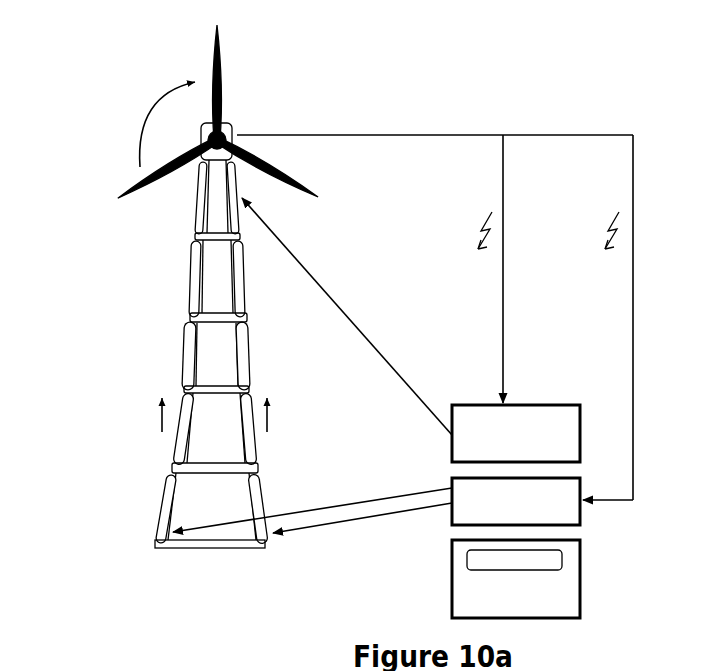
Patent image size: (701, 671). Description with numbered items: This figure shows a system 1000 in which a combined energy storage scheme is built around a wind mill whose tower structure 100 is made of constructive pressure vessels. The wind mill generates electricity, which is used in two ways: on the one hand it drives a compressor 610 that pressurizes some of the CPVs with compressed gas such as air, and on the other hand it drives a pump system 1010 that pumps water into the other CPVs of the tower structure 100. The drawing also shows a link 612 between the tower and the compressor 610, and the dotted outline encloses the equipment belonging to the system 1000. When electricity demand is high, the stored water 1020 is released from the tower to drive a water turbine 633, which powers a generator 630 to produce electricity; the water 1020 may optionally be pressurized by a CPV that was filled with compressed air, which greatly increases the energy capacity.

The tower structure 100 is at (123, 115).
The system 1000 is at (590, 127).
The sensor signal link 612 is at (347, 316).
The compressor 610 is at (578, 408).
The pump system 1010 is at (582, 478).
The generator 630 is at (522, 595).
The water turbine 633 is at (555, 555).
The water 1020 is at (312, 502).